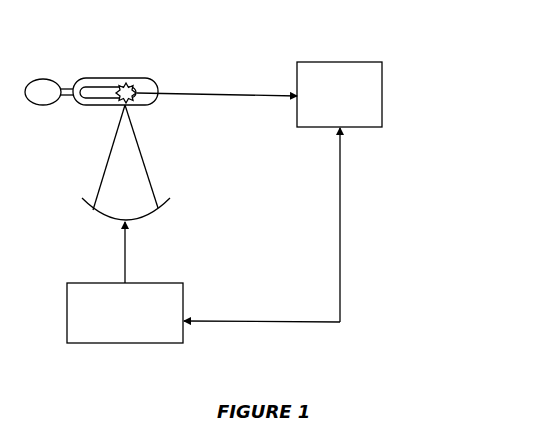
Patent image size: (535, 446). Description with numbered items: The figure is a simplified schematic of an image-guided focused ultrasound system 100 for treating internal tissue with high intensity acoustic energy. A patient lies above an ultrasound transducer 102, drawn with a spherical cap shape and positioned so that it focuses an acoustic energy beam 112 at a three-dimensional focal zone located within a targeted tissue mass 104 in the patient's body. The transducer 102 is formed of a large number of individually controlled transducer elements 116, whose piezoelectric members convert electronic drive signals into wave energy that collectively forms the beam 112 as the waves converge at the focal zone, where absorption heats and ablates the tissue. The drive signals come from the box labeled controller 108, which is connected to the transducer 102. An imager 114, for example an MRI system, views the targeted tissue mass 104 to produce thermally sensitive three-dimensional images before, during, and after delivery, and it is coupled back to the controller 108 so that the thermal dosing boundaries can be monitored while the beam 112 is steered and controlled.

The image-guided focused ultrasound system 100 is at (444, 66).
The ultrasound transducer 102 is at (173, 193).
The targeted tissue mass 104 is at (140, 90).
The controller 108 is at (188, 308).
The focused acoustic energy beam 112 is at (147, 164).
The imager 114 is at (344, 62).
The individually controlled transducer elements 116 is at (100, 79).